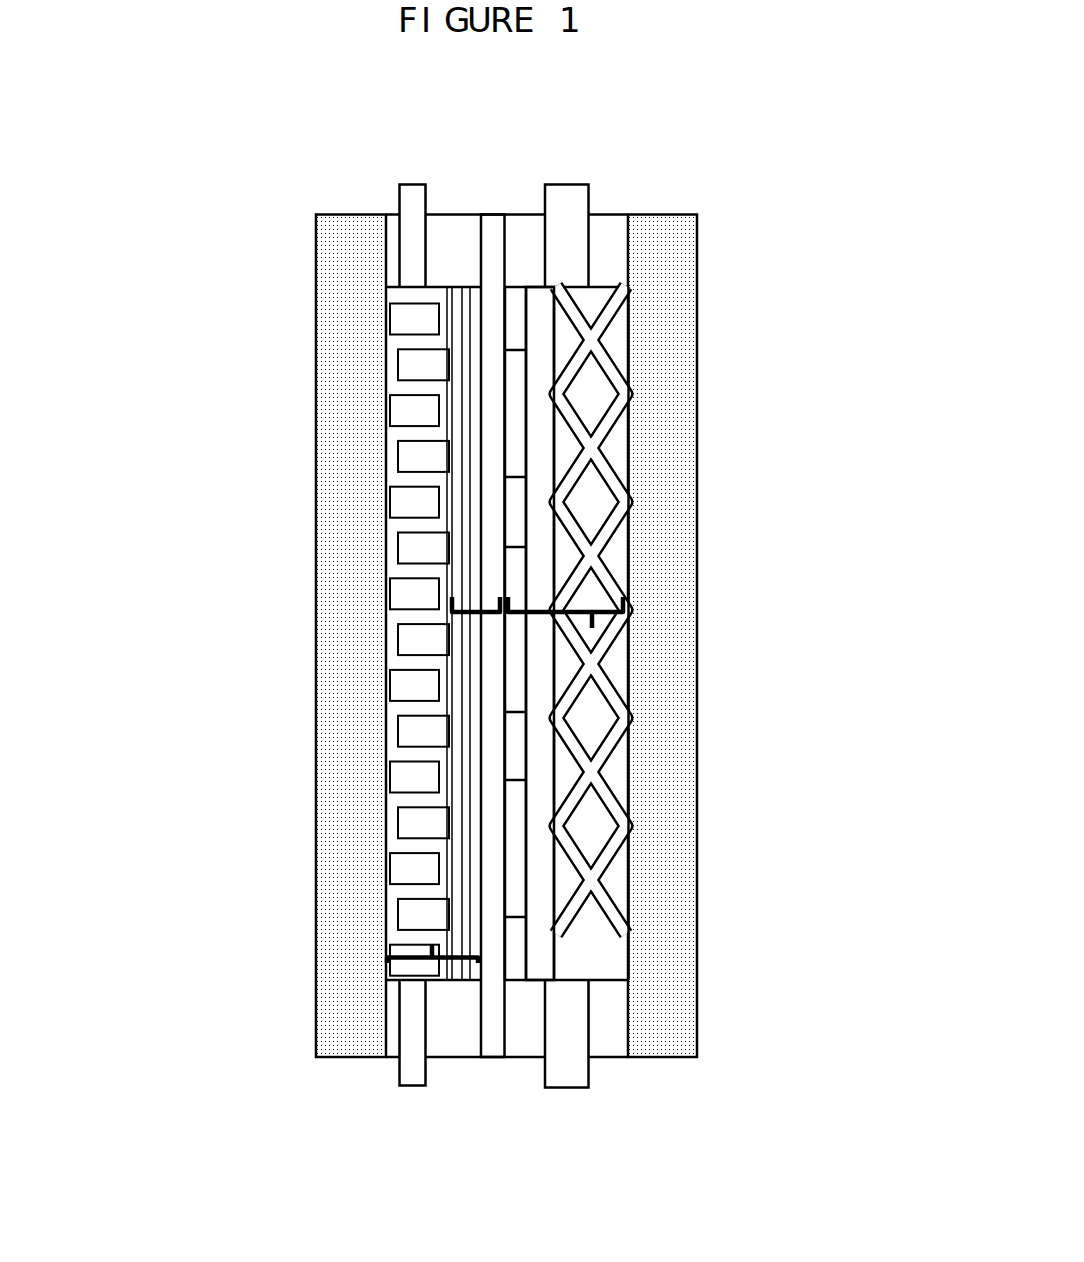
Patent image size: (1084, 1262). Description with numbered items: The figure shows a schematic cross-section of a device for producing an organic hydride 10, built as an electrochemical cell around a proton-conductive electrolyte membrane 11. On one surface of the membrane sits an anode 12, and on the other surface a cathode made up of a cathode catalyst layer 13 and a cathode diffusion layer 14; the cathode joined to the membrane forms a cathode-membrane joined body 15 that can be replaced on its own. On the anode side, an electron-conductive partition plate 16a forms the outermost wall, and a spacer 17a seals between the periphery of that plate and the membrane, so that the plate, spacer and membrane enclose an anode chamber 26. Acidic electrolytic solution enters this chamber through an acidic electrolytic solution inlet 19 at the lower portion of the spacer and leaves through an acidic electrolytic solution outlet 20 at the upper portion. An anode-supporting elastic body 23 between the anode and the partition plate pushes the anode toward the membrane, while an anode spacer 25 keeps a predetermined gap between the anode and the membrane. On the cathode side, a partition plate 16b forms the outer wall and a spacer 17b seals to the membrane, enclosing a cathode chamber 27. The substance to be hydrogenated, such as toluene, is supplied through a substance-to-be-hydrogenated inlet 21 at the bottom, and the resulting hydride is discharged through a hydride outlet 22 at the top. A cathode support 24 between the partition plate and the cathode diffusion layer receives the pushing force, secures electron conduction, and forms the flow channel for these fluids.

The device for producing an organic hydride 10 is at (507, 1206).
The electrolyte membrane 11 is at (488, 202).
The anode 12 is at (553, 508).
The cathode catalyst layer 13 is at (459, 384).
The cathode diffusion layer 14 is at (453, 464).
The cathode-membrane joined body 15 is at (463, 627).
The partition plate 16a is at (704, 622).
The partition plate 16b is at (306, 649).
The spacer 17a is at (641, 1025).
The spacer 17b is at (373, 1023).
The acidic electrolytic solution inlet 19 is at (571, 1102).
The acidic electrolytic solution outlet 20 is at (571, 171).
The substance-to-be-hydrogenated inlet 21 is at (417, 1099).
The hydride outlet 22 is at (405, 172).
The anode-supporting elastic body 23 is at (616, 337).
The cathode support 24 is at (425, 506).
The anode spacer 25 is at (531, 306).
The anode chamber 26 is at (606, 638).
The cathode chamber 27 is at (421, 937).